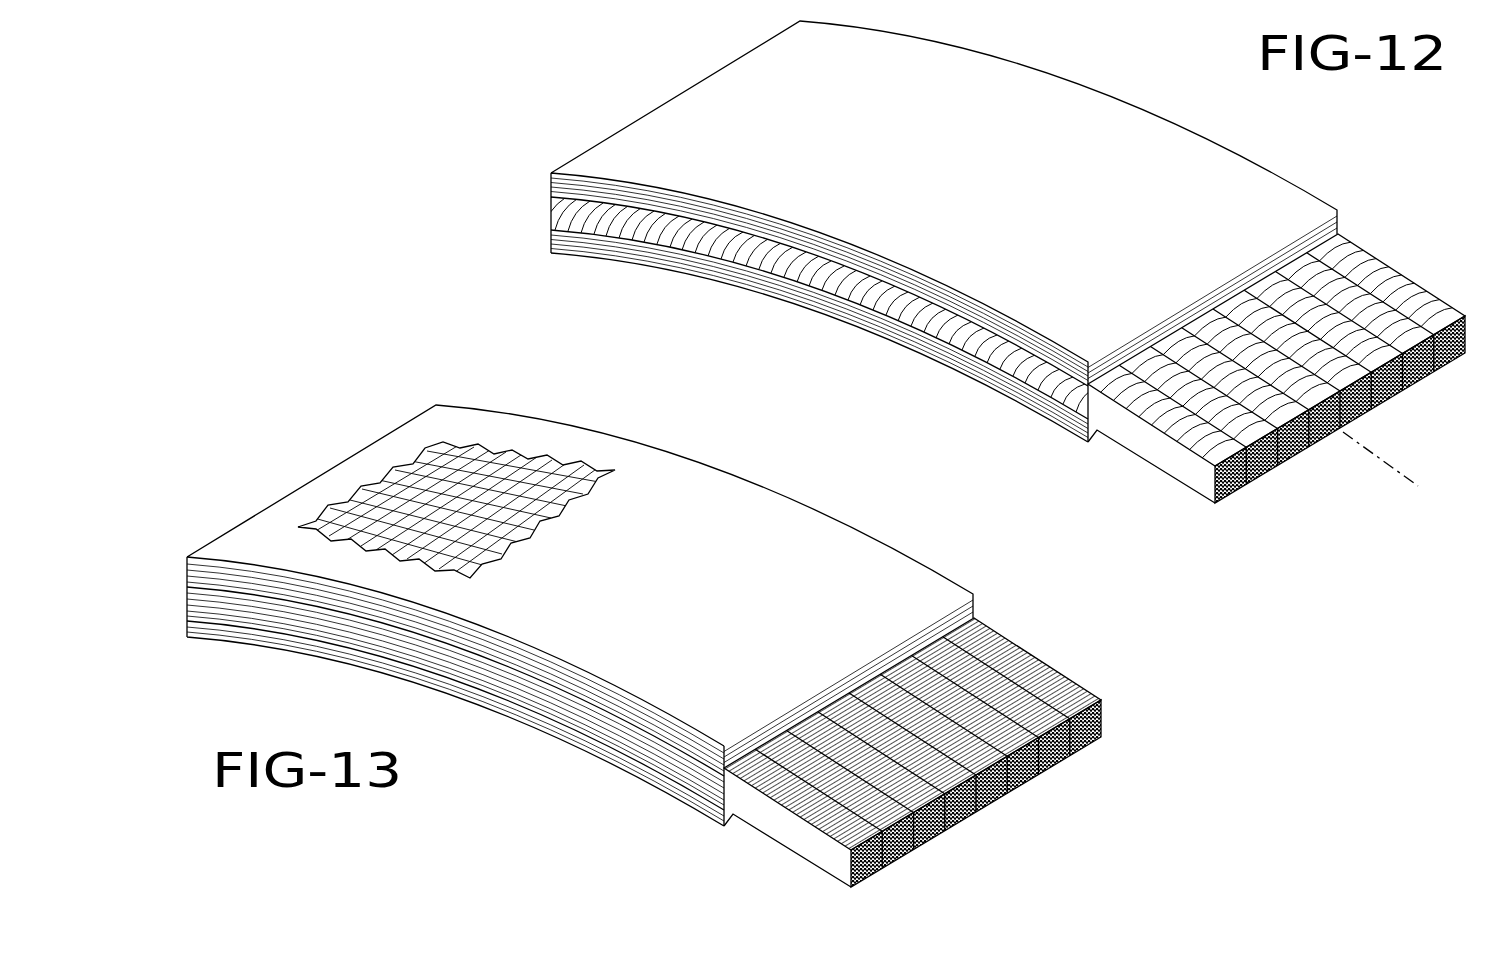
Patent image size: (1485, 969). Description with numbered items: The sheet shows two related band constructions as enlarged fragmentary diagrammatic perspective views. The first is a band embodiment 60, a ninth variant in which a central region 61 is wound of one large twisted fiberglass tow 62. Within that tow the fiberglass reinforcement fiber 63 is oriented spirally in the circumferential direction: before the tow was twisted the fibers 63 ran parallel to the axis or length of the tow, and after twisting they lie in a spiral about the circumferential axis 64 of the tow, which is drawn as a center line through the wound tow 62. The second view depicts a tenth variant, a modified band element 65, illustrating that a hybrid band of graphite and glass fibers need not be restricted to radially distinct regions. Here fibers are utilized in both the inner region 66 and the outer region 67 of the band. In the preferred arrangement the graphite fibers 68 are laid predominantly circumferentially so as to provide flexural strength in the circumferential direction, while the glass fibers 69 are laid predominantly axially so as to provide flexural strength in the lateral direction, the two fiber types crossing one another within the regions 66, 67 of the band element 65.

In FIG. 12, the band embodiment 60 is at (1283, 489).
In FIG. 12, the central region 61 is at (1391, 249).
In FIG. 12, the twisted fiberglass tow 62 is at (1290, 448).
In FIG. 12, the fiberglass reinforcement fiber 63 is at (1155, 450).
In FIG. 12, the circumferential axis 64 is at (1368, 448).
In FIG. 13, the modified band element 65 is at (1022, 820).
In FIG. 13, the inner region 66 is at (249, 658).
In FIG. 13, the outer region 67 is at (742, 513).
In FIG. 13, the graphite fibers 68 is at (498, 460).
In FIG. 13, the glass fibers 69 is at (453, 458).